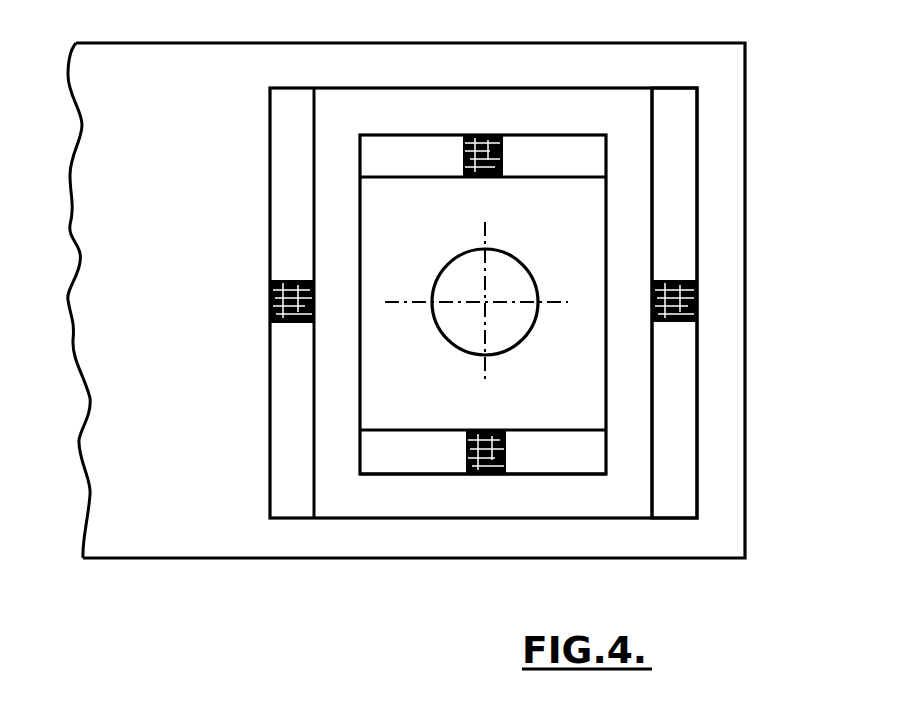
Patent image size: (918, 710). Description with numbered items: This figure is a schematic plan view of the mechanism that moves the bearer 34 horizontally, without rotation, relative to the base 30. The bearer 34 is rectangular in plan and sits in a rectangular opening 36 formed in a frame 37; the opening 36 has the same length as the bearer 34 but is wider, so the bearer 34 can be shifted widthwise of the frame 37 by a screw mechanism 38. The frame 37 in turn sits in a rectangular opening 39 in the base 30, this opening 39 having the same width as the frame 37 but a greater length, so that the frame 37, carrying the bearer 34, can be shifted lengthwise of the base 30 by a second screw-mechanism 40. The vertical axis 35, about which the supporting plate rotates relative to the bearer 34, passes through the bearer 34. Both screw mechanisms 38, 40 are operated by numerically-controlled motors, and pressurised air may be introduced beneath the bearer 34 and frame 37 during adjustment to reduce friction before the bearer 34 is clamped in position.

The base 30 is at (135, 418).
The bearer 34 is at (393, 402).
The vertical axis 35 is at (487, 305).
The rectangular opening 36 is at (577, 148).
The frame 37 is at (355, 110).
The screw mechanism 38 is at (480, 130).
The rectangular opening 39 is at (675, 124).
The screw-mechanism 40 is at (697, 316).